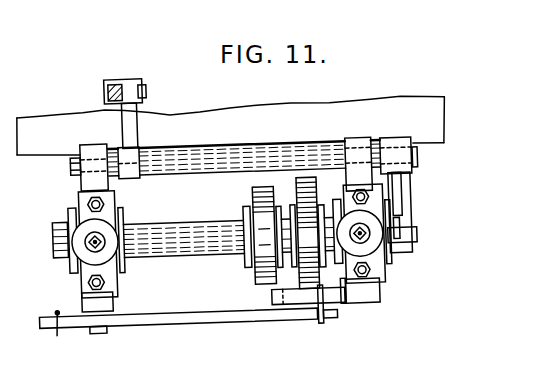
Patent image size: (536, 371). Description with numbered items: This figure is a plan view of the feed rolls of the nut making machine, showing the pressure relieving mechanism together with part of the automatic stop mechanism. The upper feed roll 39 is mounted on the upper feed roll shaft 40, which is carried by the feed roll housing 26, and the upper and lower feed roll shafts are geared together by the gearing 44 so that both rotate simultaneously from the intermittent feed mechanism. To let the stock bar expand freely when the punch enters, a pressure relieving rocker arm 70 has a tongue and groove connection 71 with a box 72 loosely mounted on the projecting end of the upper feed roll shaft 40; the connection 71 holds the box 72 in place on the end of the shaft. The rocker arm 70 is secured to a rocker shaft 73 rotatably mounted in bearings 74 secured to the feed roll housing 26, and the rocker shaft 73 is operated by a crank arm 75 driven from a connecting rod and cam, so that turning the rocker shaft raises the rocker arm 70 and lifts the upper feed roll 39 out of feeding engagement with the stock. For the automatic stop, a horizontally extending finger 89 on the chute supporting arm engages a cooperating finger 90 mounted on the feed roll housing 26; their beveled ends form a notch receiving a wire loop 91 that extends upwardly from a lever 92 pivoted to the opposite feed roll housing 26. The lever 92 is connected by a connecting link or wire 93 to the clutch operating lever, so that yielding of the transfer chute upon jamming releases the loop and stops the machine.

The feed roll housing 26 is at (80, 293).
The upper feed roll 39 is at (254, 197).
The upper feed roll shaft 40 is at (219, 253).
The gearing 44 is at (310, 182).
The pressure relieving rocker arm 70 is at (412, 196).
The tongue and groove connection 71 is at (403, 214).
The box 72 is at (408, 244).
The rocker shaft 73 is at (211, 157).
The bearings 74 is at (95, 143).
The crank arm 75 is at (132, 119).
The horizontally extending finger 89 is at (270, 299).
The cooperating finger 90 is at (340, 306).
The wire loop 91 is at (318, 327).
The lever 92 is at (149, 321).
The connecting link or wire 93 is at (55, 330).